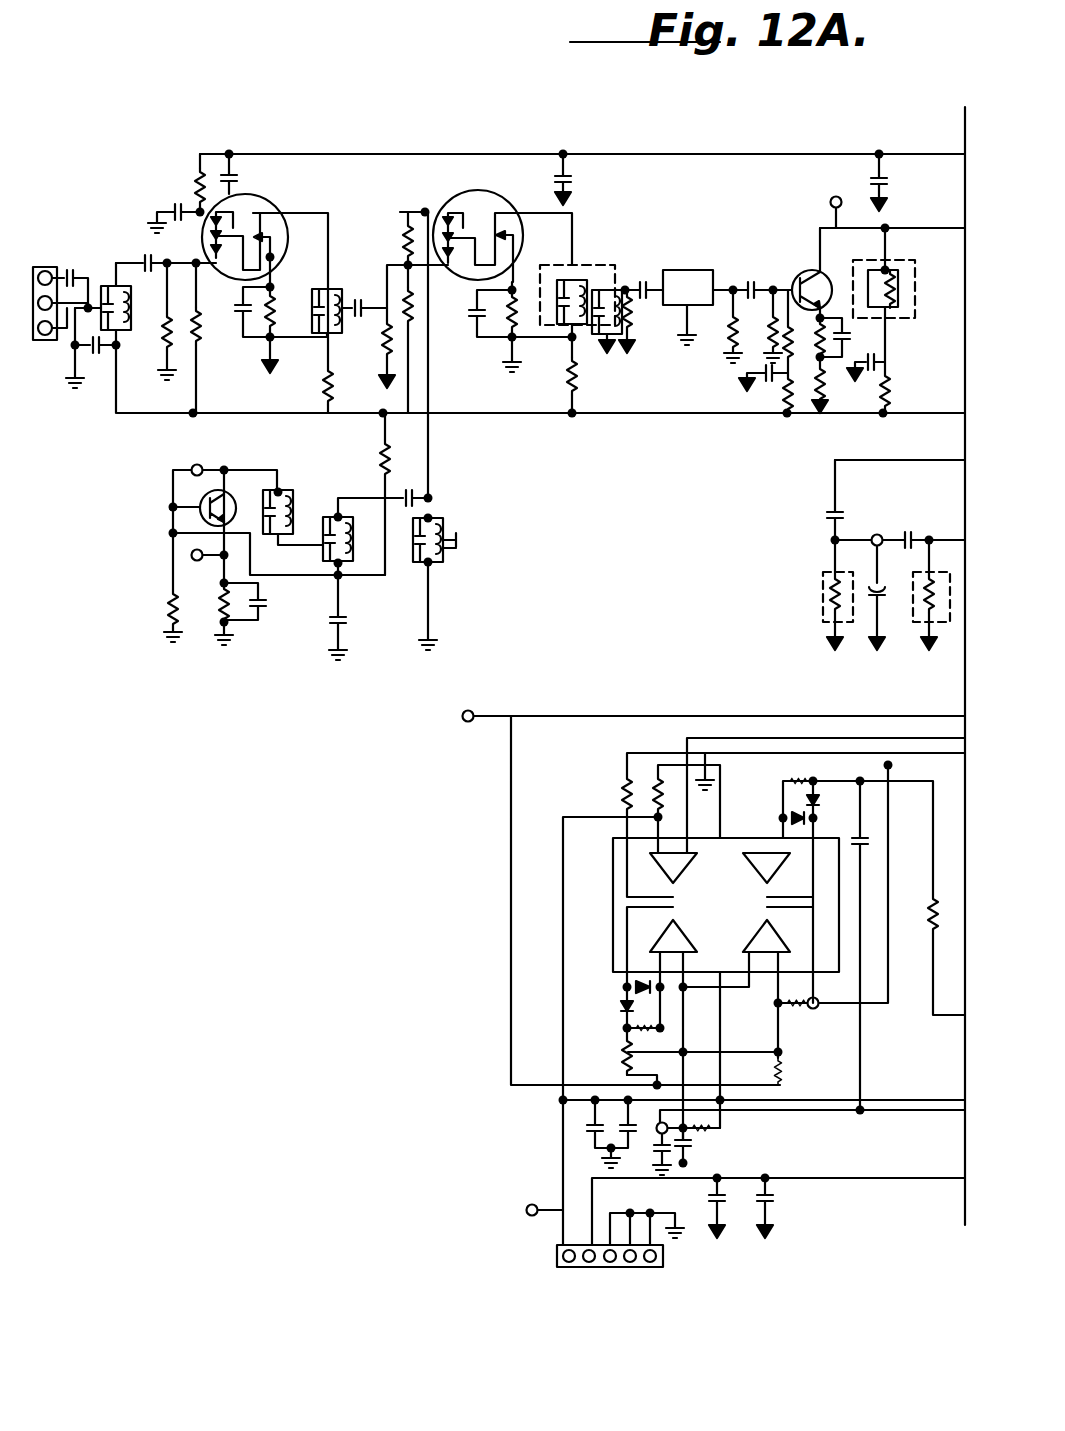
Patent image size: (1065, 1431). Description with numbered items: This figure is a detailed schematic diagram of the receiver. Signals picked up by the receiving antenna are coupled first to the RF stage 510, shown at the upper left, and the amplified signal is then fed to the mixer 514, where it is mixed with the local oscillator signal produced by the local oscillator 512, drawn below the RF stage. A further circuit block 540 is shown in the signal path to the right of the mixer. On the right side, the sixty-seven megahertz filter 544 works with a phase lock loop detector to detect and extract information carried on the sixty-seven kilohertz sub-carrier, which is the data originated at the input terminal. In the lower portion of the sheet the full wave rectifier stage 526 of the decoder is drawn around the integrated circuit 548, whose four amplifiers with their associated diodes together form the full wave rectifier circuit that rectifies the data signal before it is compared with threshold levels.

The RF stage 510 is at (229, 132).
The local oscillator 512 is at (306, 688).
The mixer 514 is at (500, 188).
The mixer / filter block 540 is at (705, 282).
The 67 MHz filter 544 is at (885, 497).
The full wave rectifier stage 526 is at (624, 916).
The integrated circuit 548 is at (690, 917).